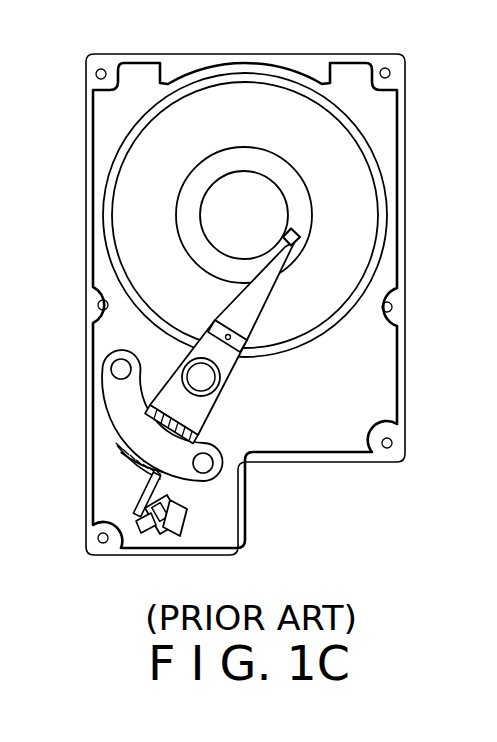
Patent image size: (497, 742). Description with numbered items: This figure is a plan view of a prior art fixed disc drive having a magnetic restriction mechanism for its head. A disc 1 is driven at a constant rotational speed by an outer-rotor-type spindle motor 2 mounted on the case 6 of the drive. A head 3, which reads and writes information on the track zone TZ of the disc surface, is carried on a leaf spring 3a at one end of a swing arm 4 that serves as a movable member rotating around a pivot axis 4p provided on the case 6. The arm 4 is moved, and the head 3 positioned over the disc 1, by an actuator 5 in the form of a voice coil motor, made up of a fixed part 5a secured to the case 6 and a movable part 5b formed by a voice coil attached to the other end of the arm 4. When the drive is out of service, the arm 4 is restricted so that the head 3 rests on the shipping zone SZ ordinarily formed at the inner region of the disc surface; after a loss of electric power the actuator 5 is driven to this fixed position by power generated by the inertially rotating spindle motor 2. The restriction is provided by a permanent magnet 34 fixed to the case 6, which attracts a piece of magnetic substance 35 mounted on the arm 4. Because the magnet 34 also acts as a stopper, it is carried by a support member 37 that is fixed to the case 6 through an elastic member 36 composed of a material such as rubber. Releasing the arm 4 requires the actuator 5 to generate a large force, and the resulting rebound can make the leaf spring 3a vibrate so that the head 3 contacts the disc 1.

The disc 1 is at (188, 84).
The spindle motor 2 is at (242, 186).
The head 3 is at (306, 226).
The leaf spring 3a is at (256, 318).
The swing arm 4 is at (208, 421).
The pivot axis 4p is at (206, 378).
The actuator 5 is at (74, 440).
The fixed part 5a is at (119, 441).
The movable part 5b is at (131, 466).
The case 6 is at (316, 58).
The permanent magnet 34 is at (164, 534).
The piece of magnetic substance 35 is at (137, 538).
The elastic member 36 is at (190, 510).
The support member 37 is at (182, 534).
The track zone TZ is at (370, 192).
The shipping zone SZ is at (307, 224).